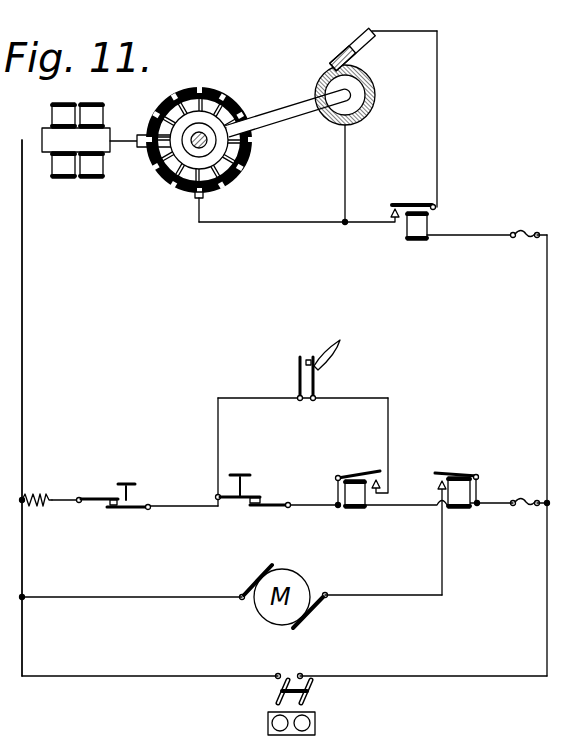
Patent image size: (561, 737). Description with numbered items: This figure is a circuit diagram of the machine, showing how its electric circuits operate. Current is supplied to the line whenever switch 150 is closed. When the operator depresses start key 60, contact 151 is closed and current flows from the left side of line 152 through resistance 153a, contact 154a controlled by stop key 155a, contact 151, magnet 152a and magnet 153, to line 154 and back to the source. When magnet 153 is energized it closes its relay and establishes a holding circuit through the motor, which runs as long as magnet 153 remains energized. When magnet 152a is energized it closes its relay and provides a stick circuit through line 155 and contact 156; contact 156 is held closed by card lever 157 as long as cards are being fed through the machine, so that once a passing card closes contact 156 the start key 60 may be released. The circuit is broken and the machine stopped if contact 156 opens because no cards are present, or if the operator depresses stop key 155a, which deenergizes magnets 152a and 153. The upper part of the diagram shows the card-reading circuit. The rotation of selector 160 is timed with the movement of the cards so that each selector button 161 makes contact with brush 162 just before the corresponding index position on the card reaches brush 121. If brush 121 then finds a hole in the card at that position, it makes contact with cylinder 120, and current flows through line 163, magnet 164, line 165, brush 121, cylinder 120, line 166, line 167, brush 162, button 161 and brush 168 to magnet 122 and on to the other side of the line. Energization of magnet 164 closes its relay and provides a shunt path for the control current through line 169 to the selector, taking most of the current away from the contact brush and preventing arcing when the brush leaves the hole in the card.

The start key 60 is at (250, 476).
The cylinder 120 is at (376, 91).
The brush 121 is at (346, 60).
The magnet 122 is at (68, 118).
The switch 150 is at (318, 705).
The contact 151 is at (256, 506).
The line 152 is at (24, 440).
The magnet 152a is at (366, 496).
The magnet 153 is at (466, 490).
The resistance 153a is at (56, 510).
The line 154 is at (546, 548).
The contact 154a is at (98, 508).
The line 155 is at (235, 398).
The stop key 155a is at (136, 484).
The contact 156 is at (307, 356).
The card lever 157 is at (342, 347).
The selector 160 is at (223, 123).
The selector button 161 is at (250, 162).
The brush 162 is at (197, 200).
The line 163 is at (546, 365).
The magnet 164 is at (429, 226).
The line 165 is at (438, 133).
The line 166 is at (348, 165).
The line 167 is at (276, 225).
The brush 168 is at (140, 130).
The line 169 is at (366, 225).